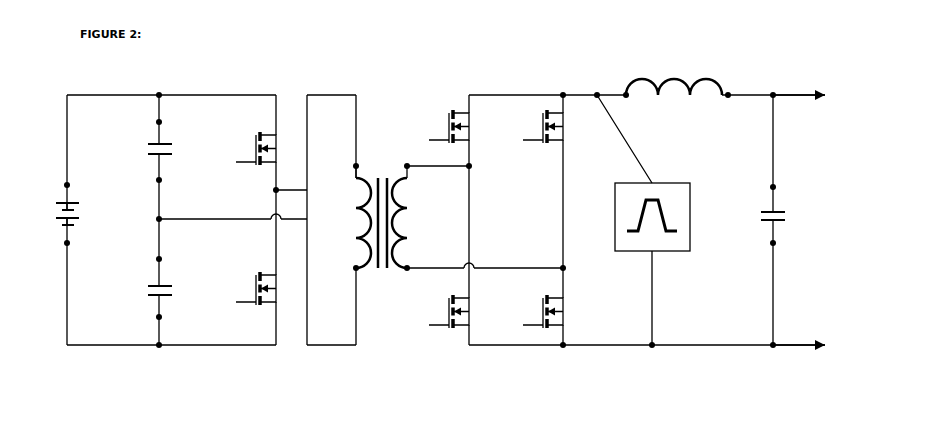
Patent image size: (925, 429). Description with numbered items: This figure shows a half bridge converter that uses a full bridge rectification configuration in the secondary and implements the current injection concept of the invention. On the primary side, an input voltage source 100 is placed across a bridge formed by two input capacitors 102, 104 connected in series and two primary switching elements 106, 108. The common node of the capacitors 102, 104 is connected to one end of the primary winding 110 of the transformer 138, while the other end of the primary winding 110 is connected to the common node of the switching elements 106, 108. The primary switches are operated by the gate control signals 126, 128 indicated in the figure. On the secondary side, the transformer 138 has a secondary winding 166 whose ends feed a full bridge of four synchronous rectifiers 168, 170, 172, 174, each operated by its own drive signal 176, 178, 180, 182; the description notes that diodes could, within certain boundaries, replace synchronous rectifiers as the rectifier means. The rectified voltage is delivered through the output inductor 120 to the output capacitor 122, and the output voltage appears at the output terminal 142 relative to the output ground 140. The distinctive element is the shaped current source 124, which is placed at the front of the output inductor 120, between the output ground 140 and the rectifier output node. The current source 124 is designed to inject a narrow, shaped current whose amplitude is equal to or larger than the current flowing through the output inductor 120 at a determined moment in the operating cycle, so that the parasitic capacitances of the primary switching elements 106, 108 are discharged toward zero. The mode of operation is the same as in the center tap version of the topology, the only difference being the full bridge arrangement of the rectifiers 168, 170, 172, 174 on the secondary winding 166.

The input voltage source 100 is at (52, 207).
The input capacitor 102 is at (148, 152).
The input capacitor 104 is at (148, 290).
The primary switching element 106 is at (248, 155).
The primary switching element 108 is at (248, 292).
The primary winding 110 is at (351, 220).
The output inductor 120 is at (672, 81).
The output capacitor 122 is at (770, 212).
The shaped current source 124 is at (670, 253).
The gate control signal VcQ1 126 is at (213, 172).
The gate control signal VcQ2 128 is at (213, 308).
The transformer 138 is at (398, 80).
The output ground 140 is at (778, 347).
The output positive terminal Vo 142 is at (780, 97).
The secondary winding Lr 166 is at (413, 217).
The synchronous rectifier SR1 168 is at (442, 136).
The synchronous rectifier SR3 170 is at (536, 138).
The synchronous rectifier SR2 172 is at (441, 323).
The synchronous rectifier SR4 174 is at (537, 320).
The gate control signal VcSR1 176 is at (400, 153).
The gate control signal VcSR3 178 is at (500, 156).
The gate control signal VcSR2 180 is at (410, 330).
The gate control signal VcSR4 182 is at (499, 342).